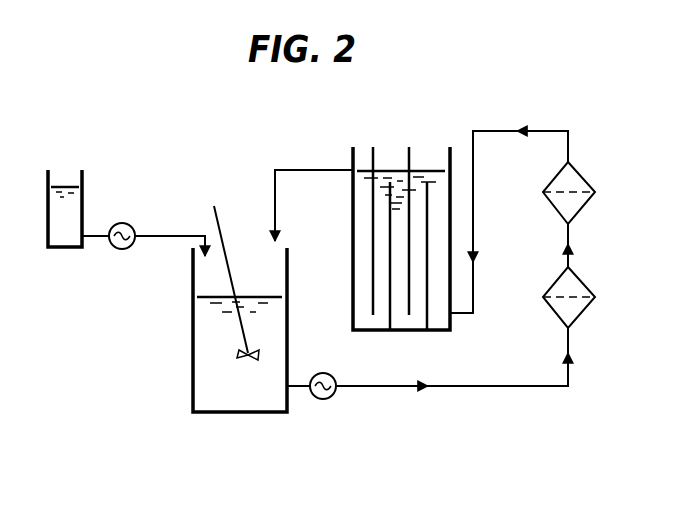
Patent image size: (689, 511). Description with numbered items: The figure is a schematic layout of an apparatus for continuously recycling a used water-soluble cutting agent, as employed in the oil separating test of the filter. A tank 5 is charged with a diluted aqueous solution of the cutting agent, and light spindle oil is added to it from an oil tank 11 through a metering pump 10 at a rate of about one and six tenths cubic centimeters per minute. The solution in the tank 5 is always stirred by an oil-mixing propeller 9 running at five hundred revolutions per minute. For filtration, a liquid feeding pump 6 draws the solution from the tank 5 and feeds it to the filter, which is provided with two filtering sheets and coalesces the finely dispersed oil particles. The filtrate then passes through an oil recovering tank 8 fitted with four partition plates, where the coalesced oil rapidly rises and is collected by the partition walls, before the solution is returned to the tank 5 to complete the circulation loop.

The tank 5 is at (268, 413).
The liquid feeding pump 6 is at (333, 396).
The oil recovering tank 8 is at (446, 160).
The oil-mixing propeller 9 is at (219, 212).
The metering pump 10 is at (122, 223).
The oil tank 11 is at (83, 191).